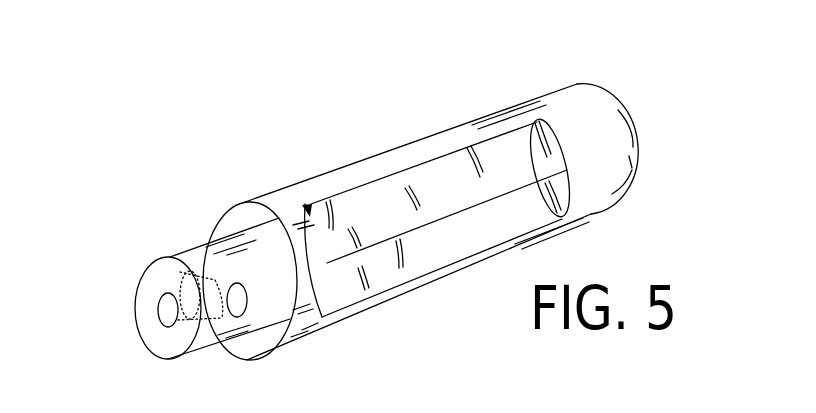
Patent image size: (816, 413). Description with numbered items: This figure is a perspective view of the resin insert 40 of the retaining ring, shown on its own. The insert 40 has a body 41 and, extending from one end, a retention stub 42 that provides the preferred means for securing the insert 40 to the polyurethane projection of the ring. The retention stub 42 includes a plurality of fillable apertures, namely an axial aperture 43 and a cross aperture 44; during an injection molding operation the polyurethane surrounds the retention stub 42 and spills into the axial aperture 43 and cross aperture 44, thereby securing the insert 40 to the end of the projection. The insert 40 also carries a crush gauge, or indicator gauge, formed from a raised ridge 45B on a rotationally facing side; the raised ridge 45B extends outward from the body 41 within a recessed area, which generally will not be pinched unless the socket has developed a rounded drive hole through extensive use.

The resin insert 40 is at (640, 82).
The body 41 is at (436, 138).
The retention stub 42 is at (207, 251).
The axial aperture 43 is at (166, 313).
The cross aperture 44 is at (238, 306).
The raised ridge 45B is at (493, 193).